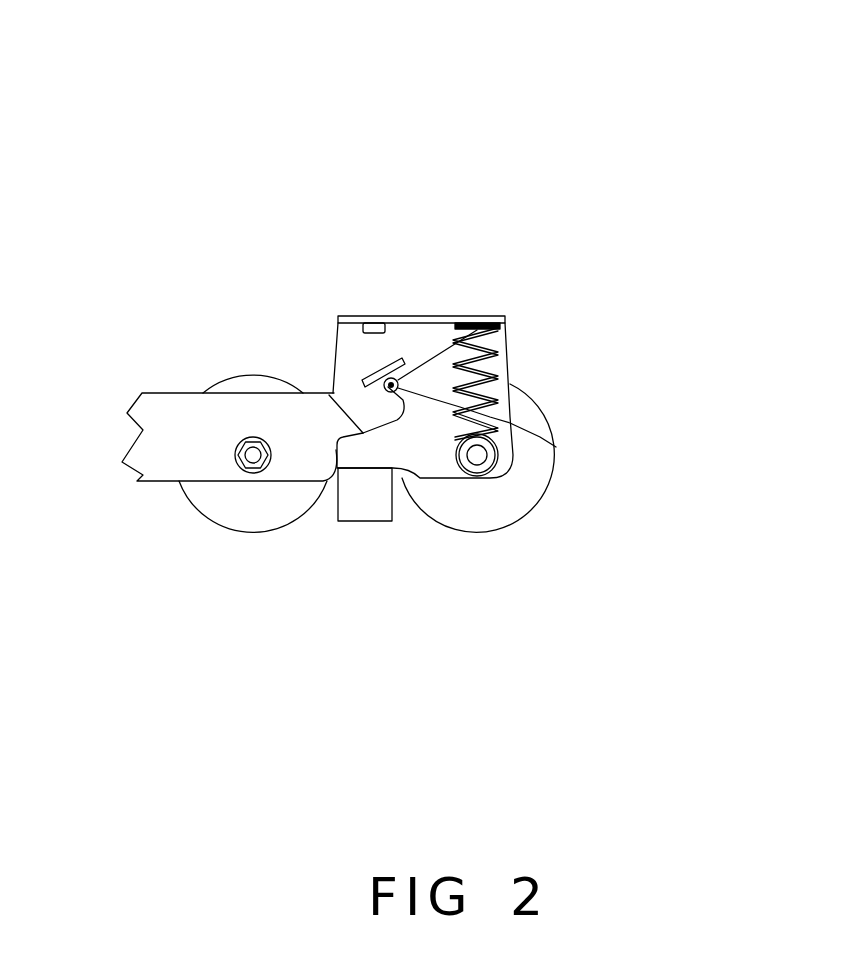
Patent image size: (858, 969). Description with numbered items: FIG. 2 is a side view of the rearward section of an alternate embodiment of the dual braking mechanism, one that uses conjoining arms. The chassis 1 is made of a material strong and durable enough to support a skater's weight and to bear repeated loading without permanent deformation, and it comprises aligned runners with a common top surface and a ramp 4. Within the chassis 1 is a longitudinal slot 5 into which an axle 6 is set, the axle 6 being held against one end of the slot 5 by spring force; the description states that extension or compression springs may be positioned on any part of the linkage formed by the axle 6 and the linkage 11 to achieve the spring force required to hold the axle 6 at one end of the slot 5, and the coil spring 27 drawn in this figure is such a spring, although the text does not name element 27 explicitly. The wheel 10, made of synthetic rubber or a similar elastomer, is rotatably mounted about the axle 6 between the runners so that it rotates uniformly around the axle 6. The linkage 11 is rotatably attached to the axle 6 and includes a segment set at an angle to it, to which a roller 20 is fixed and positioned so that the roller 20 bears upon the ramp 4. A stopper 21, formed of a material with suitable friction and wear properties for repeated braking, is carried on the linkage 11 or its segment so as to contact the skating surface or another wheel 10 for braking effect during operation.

The chassis 1 is at (216, 336).
The ramp 4 is at (423, 251).
The longitudinal slot 5 is at (578, 472).
The axle 6 is at (502, 561).
The wheel 10 is at (440, 570).
The linkage 11 is at (289, 280).
The roller 20 is at (534, 230).
The stopper 21 is at (387, 634).
The spring 27 is at (639, 317).